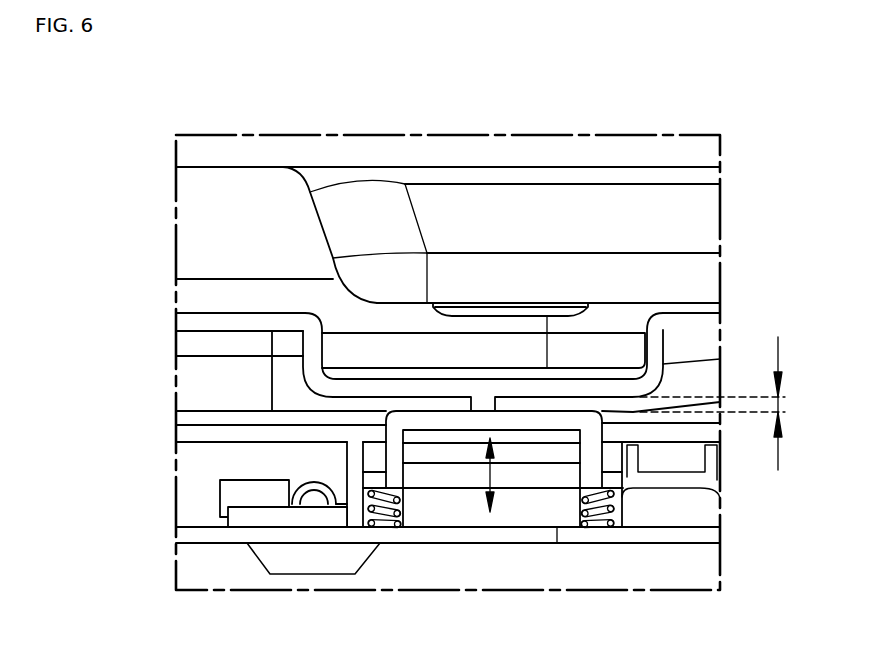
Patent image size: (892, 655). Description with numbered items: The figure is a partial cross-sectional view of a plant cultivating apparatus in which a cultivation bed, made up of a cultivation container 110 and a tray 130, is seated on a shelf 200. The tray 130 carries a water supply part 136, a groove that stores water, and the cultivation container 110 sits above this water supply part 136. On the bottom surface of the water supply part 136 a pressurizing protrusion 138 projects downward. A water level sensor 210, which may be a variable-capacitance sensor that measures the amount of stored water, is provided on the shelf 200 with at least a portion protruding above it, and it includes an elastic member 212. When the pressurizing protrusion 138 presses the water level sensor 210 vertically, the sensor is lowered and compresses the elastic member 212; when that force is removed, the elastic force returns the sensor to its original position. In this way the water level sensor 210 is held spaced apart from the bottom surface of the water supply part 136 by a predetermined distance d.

The cultivation container 110 is at (555, 210).
The tray 130 is at (218, 360).
The water supply part 136 is at (597, 358).
The pressurizing protrusion 138 is at (483, 398).
The shelf 200 is at (277, 515).
The water level sensor 210 is at (438, 450).
The elastic member 212 is at (598, 512).
The predetermined distance d is at (727, 403).